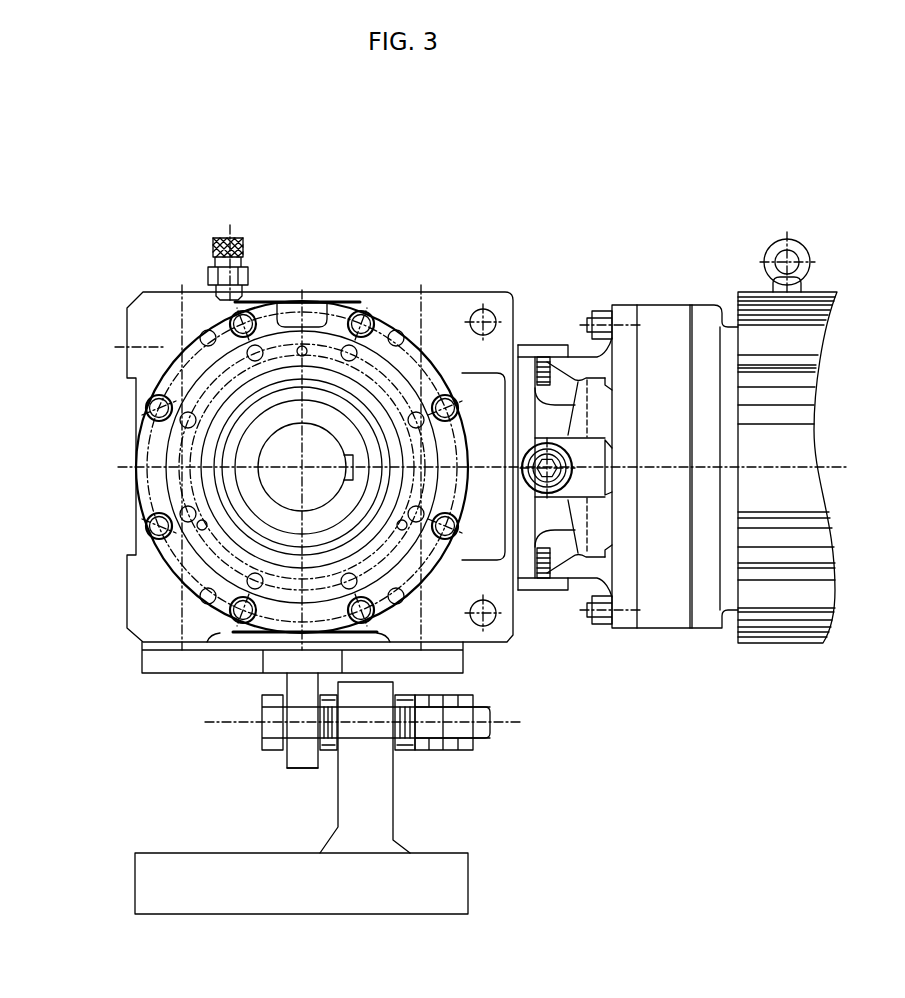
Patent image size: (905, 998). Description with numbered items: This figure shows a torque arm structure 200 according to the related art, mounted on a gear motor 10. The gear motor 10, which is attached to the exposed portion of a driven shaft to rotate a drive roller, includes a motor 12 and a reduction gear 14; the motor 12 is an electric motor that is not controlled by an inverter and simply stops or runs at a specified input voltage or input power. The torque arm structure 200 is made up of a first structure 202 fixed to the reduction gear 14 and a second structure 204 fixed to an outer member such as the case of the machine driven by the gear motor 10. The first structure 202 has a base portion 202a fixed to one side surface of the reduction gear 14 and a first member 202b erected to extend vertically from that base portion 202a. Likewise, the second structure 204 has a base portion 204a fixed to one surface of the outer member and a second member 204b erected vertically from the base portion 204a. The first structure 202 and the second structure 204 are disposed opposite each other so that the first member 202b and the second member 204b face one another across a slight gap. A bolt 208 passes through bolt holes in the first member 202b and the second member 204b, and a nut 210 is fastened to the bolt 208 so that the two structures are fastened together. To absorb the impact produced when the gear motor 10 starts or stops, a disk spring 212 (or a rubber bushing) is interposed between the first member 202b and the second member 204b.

The gear motor 10 is at (646, 222).
The motor 12 is at (757, 310).
The reduction gear 14 is at (470, 295).
The torque arm structure 200 is at (545, 719).
The first structure 202 is at (82, 698).
The base portion 202a is at (168, 663).
The first member 202b is at (300, 685).
The second structure 204 is at (583, 822).
The base portion 204a is at (450, 880).
The second member 204b is at (375, 825).
The bolt 208 is at (273, 745).
The nut 210 is at (460, 745).
The disk spring 212 is at (319, 700).